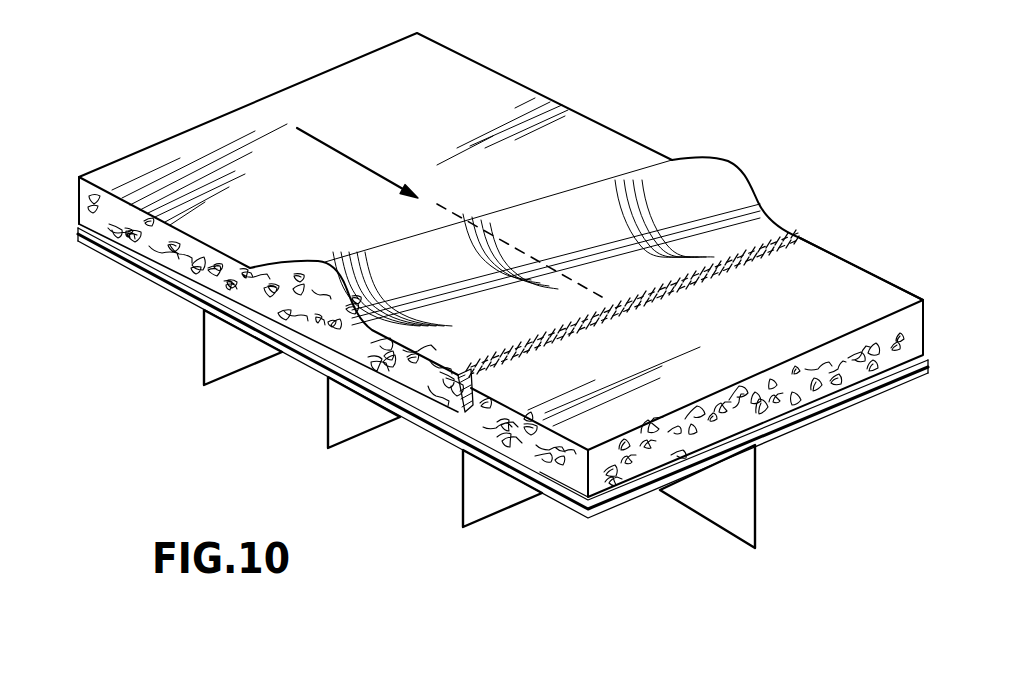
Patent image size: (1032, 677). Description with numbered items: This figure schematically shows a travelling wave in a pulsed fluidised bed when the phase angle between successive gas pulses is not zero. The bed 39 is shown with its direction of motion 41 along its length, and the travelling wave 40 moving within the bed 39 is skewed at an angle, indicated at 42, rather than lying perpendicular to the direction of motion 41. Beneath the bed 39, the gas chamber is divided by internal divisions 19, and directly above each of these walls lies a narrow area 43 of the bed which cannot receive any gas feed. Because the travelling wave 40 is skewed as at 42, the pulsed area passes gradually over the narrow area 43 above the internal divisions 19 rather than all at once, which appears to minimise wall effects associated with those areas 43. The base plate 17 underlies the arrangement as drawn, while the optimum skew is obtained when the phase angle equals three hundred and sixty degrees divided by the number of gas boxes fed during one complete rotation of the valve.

The base plate 17 is at (817, 412).
The internal divisions 19 is at (720, 500).
The bed 39 is at (307, 303).
The travelling wave 40 is at (733, 177).
The direction of motion 41 is at (357, 160).
The skewed angle 42 is at (609, 283).
The narrow area 43 is at (460, 408).